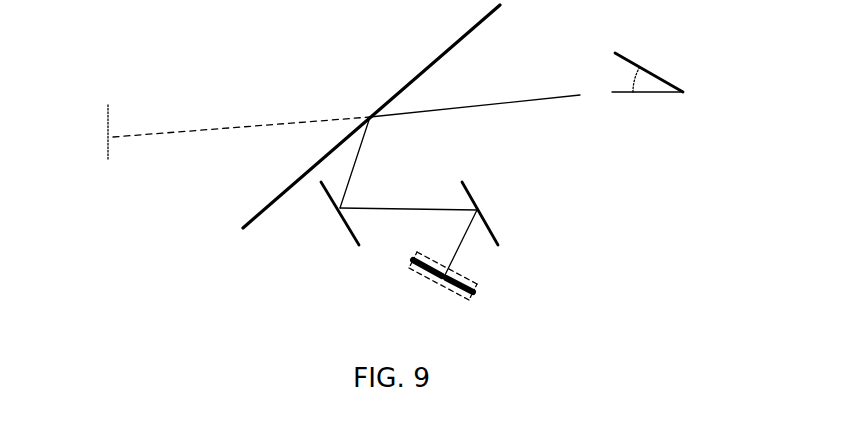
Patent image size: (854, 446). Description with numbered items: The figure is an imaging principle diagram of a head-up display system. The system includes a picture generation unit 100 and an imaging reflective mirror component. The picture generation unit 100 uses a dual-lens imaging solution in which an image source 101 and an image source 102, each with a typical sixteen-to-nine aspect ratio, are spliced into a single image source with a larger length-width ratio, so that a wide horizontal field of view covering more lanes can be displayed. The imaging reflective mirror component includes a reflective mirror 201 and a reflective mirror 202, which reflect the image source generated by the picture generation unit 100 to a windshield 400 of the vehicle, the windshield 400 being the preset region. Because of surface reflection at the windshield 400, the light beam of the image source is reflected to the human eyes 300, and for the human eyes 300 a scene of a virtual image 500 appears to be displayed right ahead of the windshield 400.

The picture generation unit 100 is at (448, 287).
The image source 101 is at (414, 257).
The image source 102 is at (475, 295).
The reflective mirror 201 is at (488, 222).
The reflective mirror 202 is at (337, 220).
The human eyes 300 is at (685, 88).
The windshield 400 is at (423, 68).
The virtual image 500 is at (108, 118).